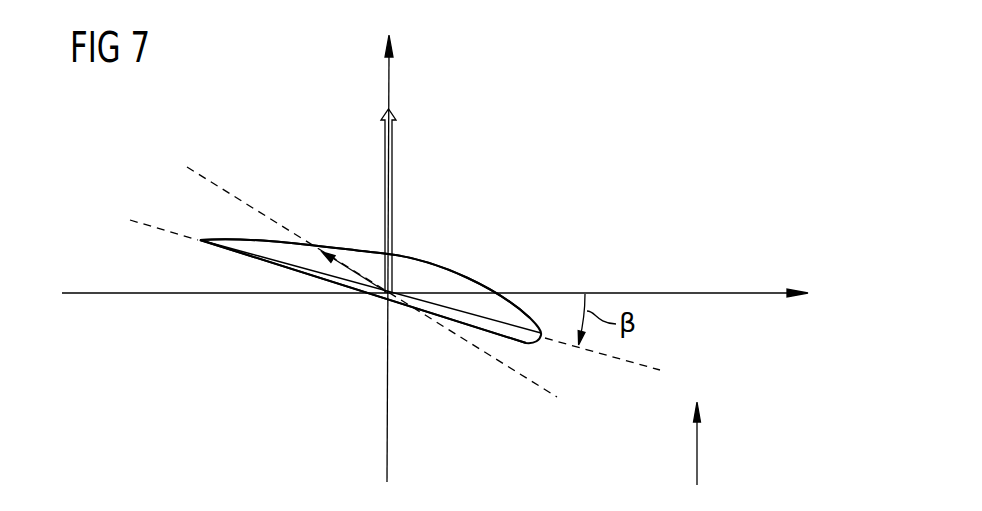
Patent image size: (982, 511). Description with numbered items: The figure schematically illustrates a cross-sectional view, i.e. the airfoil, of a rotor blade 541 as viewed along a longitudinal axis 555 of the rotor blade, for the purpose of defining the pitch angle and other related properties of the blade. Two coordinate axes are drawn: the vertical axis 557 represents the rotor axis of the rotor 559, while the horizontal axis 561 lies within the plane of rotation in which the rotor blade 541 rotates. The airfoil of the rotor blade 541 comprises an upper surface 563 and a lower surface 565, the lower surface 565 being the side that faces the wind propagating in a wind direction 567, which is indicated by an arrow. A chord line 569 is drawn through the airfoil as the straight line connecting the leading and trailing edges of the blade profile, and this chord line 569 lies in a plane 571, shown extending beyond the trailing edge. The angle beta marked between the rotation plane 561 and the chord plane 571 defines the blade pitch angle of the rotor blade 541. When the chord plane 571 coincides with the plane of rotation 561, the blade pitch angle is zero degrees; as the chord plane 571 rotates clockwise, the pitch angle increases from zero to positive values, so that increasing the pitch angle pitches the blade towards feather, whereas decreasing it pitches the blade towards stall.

The rotor blade 541 is at (443, 278).
The longitudinal axis 555 is at (378, 301).
The vertical axis 557 is at (391, 79).
The rotor 559 is at (385, 153).
The horizontal axis 561 is at (555, 293).
The upper surface 563 is at (481, 282).
The lower surface 565 is at (398, 306).
The wind direction 567 is at (698, 452).
The chord line 569 is at (503, 330).
The plane 571 is at (660, 370).